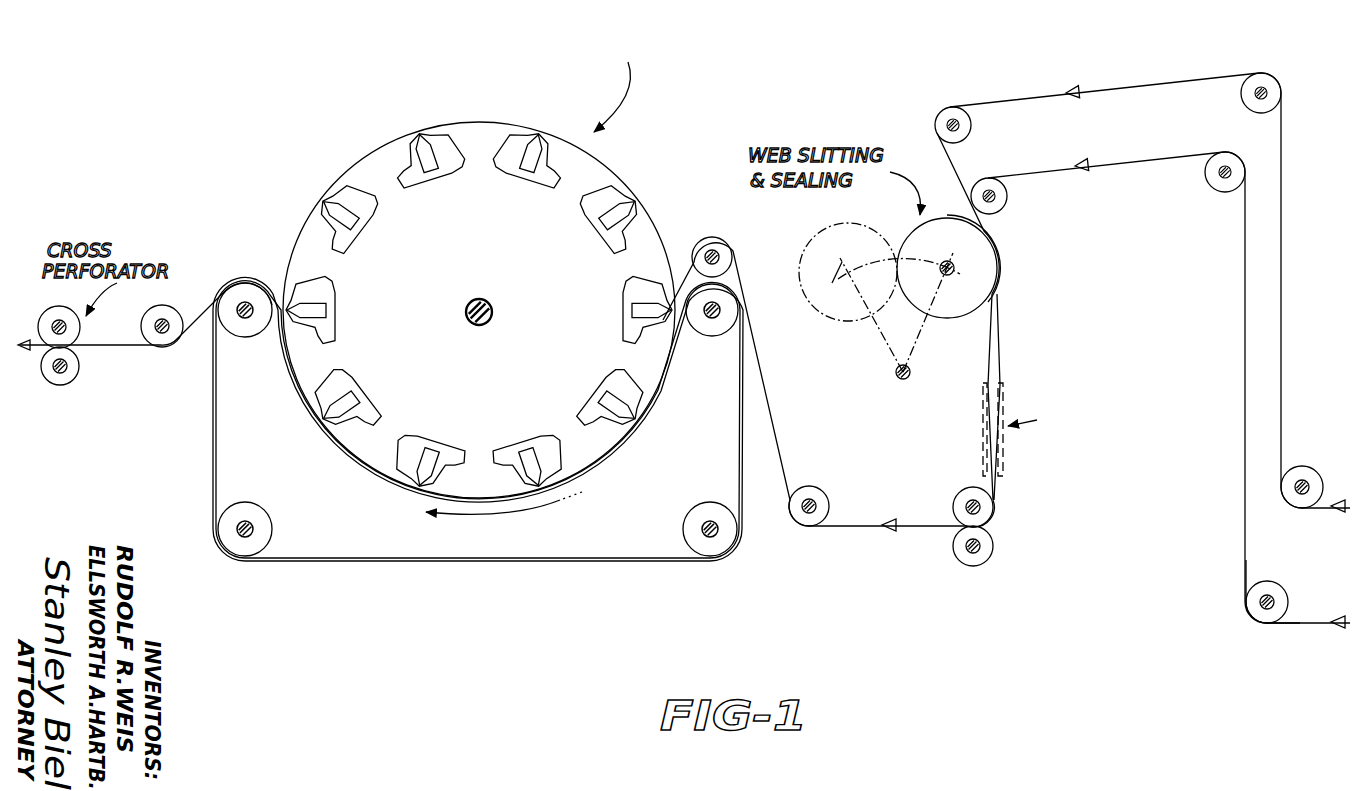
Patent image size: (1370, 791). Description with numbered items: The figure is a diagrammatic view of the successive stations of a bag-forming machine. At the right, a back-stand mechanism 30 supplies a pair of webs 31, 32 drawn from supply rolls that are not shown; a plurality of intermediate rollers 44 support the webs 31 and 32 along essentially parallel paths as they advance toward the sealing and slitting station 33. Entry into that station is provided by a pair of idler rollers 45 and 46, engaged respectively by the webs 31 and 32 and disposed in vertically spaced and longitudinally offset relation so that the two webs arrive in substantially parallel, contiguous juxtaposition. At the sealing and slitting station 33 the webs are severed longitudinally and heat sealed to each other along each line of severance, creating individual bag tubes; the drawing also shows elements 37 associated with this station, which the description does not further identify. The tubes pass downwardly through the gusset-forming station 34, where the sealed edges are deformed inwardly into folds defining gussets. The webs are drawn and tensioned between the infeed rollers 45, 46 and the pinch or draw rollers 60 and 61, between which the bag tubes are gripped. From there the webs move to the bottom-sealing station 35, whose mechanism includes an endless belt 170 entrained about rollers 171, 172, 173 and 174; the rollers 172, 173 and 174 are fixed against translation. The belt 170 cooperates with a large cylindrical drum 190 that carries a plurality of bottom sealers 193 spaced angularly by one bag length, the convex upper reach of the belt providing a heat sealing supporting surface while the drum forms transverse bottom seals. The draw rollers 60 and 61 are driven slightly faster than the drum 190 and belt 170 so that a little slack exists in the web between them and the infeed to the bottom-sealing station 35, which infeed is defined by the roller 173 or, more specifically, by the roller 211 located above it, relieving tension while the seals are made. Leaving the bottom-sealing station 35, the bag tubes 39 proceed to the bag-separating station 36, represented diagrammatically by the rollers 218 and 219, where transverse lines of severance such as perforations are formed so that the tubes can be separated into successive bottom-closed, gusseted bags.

The back-stand mechanism 30 is at (1243, 616).
The web 31 is at (1283, 439).
The web 32 is at (1243, 515).
The sealing and slitting station 33 is at (1003, 262).
The gusset-forming station 34 is at (1012, 459).
The bottom-sealing station 35 is at (479, 281).
The bag-separating station 36 is at (112, 350).
The pivoted sealing roller arm 37 is at (836, 319).
The bag tubes 39 is at (781, 468).
The intermediate rollers 44 is at (1272, 80).
The roller 45 is at (951, 108).
The roller 46 is at (1008, 200).
The pinch or draw roller 60 is at (987, 508).
The pinch or draw roller 61 is at (982, 555).
The endless belt 170 is at (487, 558).
The roller 171 is at (257, 542).
The roller 172 is at (712, 542).
The roller 173 is at (707, 333).
The roller 174 is at (259, 277).
The drum 190 is at (616, 158).
The bottom sealers 193 is at (441, 112).
The roller 211 is at (722, 245).
The roller 218 is at (71, 304).
The roller 219 is at (51, 381).